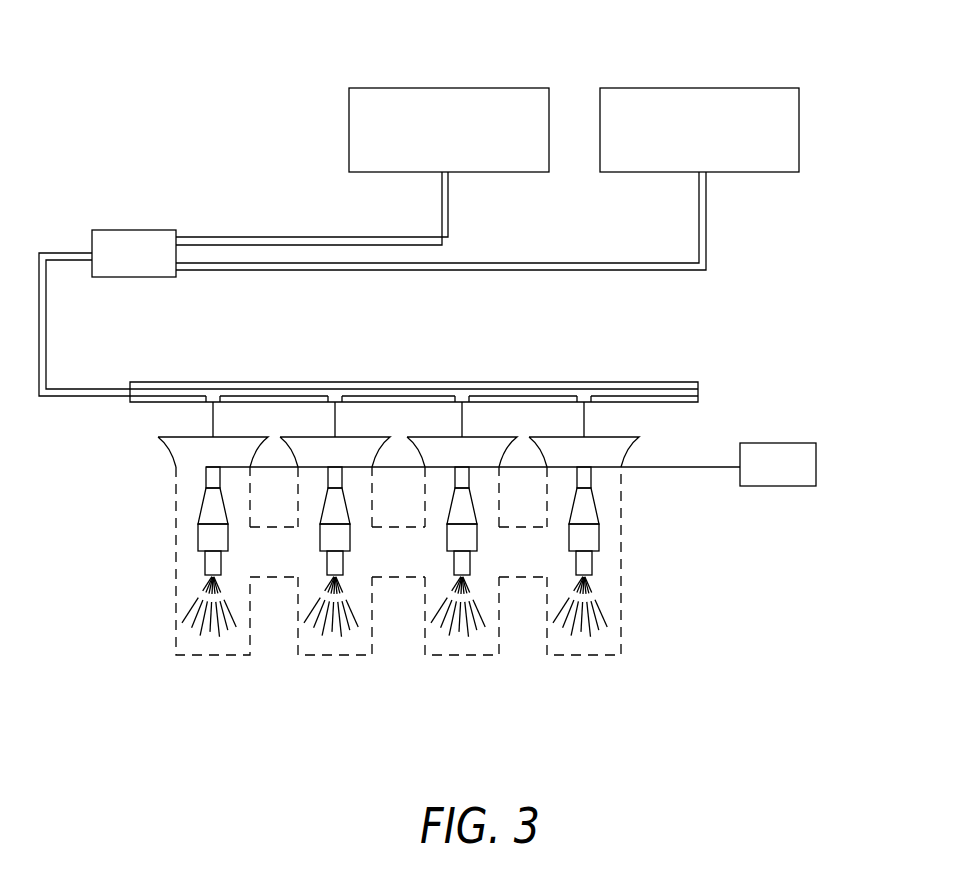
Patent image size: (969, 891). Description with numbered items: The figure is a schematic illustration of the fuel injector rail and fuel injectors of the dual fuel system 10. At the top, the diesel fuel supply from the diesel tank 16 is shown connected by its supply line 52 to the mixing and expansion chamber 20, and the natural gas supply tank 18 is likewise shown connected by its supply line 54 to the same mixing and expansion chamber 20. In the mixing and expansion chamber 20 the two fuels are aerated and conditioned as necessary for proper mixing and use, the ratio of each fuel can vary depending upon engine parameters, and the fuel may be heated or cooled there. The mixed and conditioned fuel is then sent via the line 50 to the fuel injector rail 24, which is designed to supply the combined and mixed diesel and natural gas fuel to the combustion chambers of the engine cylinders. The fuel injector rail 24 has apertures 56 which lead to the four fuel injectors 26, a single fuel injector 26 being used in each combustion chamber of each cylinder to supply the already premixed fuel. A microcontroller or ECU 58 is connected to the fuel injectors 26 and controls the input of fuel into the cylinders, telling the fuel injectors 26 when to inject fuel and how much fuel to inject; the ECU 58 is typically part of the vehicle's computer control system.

The dual fuel system 10 is at (838, 186).
The diesel tank 16 is at (428, 103).
The natural gas supply tank 18 is at (663, 100).
The mixing and expansion chamber 20 is at (127, 230).
The fuel injector rail 24 is at (698, 385).
The fuel injector 26 is at (207, 533).
The line 50 is at (46, 332).
The supply line 52 is at (300, 239).
The supply line 54 is at (307, 270).
The apertures 56 is at (215, 397).
The electronic control unit (ECU) 58 is at (791, 447).